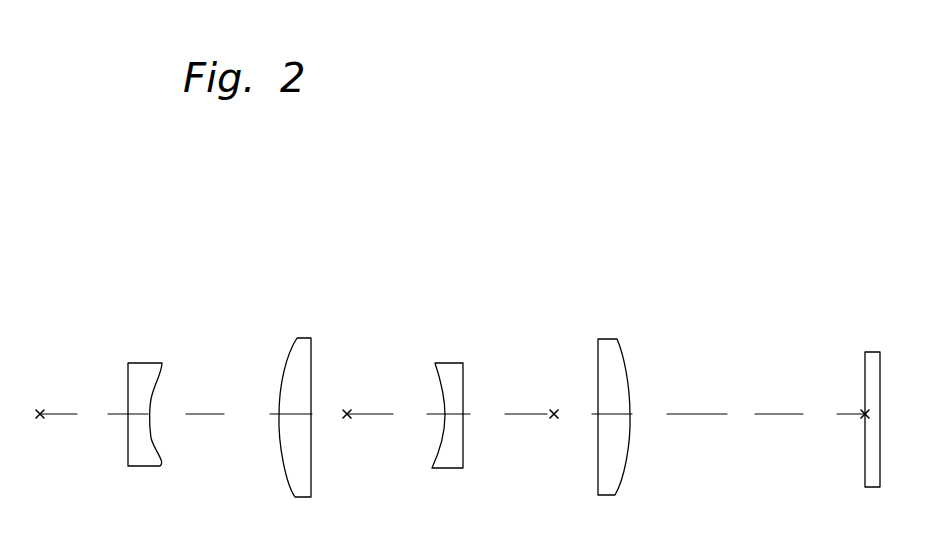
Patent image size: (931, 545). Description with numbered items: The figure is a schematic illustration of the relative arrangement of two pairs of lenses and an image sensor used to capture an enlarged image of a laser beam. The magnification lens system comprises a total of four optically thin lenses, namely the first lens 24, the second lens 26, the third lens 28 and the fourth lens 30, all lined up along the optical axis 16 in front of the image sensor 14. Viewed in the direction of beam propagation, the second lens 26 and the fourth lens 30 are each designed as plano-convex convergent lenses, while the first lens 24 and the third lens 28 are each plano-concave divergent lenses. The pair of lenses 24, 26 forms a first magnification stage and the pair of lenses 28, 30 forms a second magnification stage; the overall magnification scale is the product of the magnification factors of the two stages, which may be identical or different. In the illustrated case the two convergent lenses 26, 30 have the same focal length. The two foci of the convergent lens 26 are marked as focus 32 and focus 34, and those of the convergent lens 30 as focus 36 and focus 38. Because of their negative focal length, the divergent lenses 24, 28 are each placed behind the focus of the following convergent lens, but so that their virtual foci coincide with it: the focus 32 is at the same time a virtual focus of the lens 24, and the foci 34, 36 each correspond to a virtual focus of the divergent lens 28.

The image sensor 14 is at (872, 352).
The optical axis 16 is at (767, 420).
The first lens 24 is at (143, 362).
The second lens 26 is at (305, 338).
The third lens 28 is at (452, 363).
The fourth lens 30 is at (610, 338).
The focus 32 is at (40, 411).
The focus 34 is at (555, 410).
The focus 36 is at (347, 411).
The focus 38 is at (862, 410).